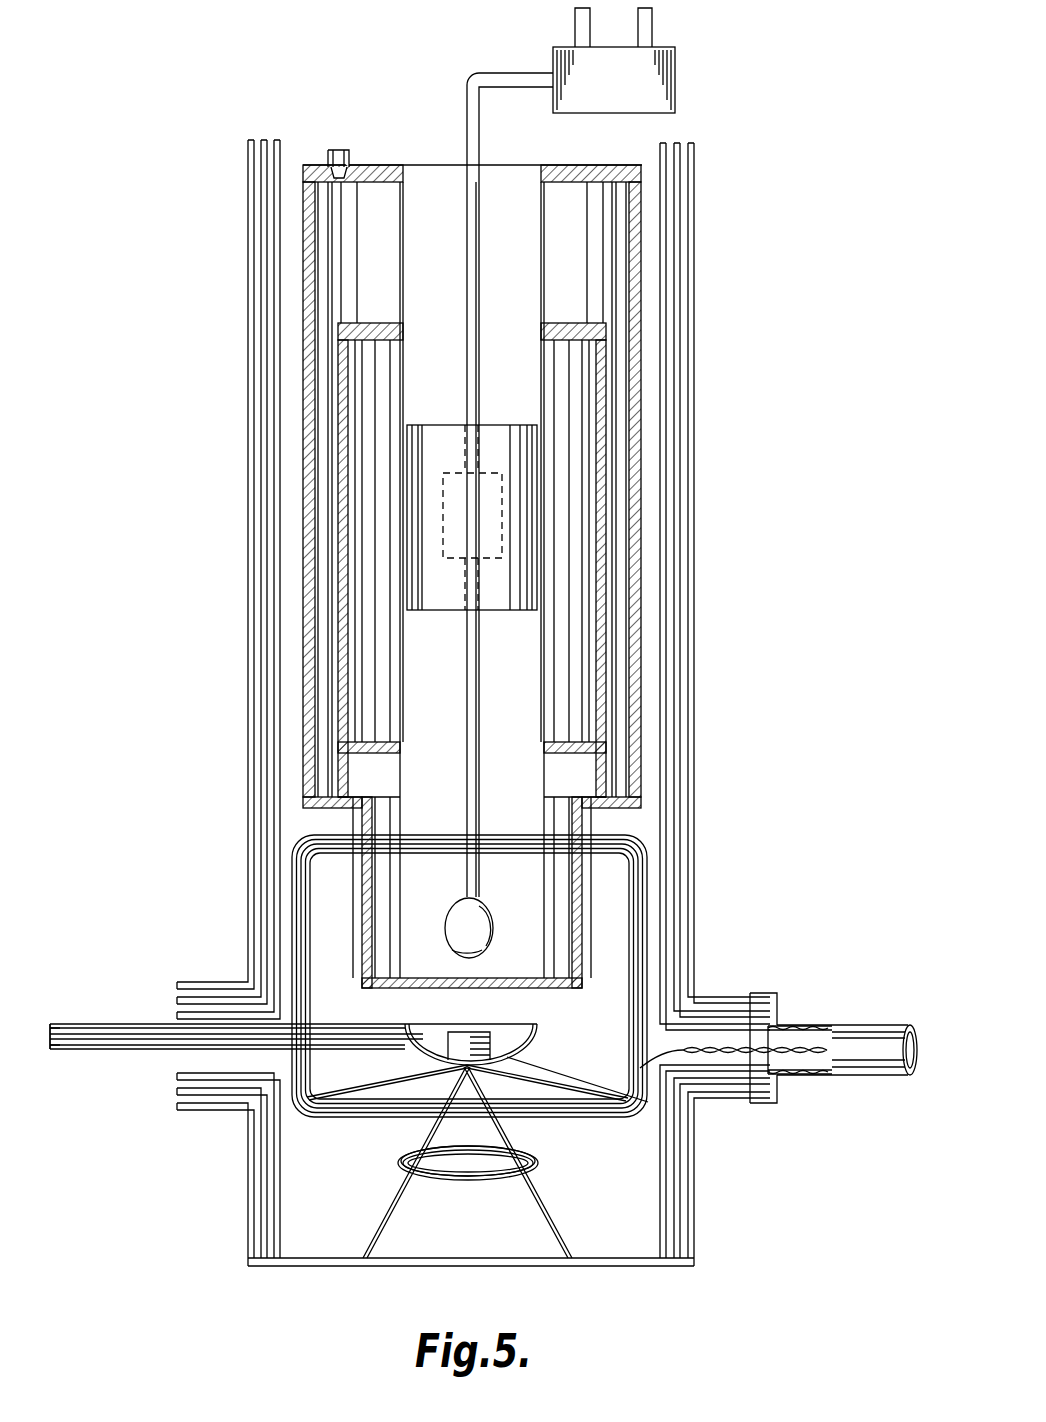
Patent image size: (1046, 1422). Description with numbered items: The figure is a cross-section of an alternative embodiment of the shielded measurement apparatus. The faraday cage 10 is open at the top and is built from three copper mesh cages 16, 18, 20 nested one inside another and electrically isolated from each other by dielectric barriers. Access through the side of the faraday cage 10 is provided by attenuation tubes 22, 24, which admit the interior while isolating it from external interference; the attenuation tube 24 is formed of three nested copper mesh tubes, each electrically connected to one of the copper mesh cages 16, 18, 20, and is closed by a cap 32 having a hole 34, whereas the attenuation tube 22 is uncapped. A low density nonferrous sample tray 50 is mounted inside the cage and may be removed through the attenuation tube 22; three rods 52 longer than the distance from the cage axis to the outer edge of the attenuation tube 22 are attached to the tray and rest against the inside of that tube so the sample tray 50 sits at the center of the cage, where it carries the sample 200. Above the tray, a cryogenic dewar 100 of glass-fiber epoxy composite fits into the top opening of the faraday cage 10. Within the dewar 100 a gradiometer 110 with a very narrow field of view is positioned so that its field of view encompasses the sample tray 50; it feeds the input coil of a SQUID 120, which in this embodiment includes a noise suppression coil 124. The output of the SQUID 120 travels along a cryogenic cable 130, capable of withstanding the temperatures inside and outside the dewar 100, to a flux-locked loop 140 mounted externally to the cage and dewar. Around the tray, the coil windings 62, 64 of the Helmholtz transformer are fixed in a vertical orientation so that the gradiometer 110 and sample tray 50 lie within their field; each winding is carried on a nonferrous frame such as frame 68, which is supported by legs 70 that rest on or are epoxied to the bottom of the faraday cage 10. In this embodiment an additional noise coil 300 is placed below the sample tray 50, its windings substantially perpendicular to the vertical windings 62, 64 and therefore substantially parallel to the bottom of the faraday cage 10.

The faraday cage 10 is at (486, 674).
The copper mesh cage 16 is at (695, 143).
The copper mesh cage 18 is at (681, 143).
The copper mesh cage 20 is at (667, 143).
The attenuation tube 22 is at (168, 1059).
The attenuation tube 24 is at (784, 1081).
The cap 32 is at (778, 1010).
The hole 34 is at (766, 1056).
The sample tray 50 is at (625, 1112).
The rods 52 is at (103, 1049).
The coil winding 62 is at (340, 1093).
The coil winding 64 is at (340, 1093).
The frame 68 is at (380, 1095).
The legs 70 is at (388, 1221).
The cryogenic dewar 100 is at (374, 161).
The gradiometer 110 is at (493, 925).
The SQUID 120 is at (538, 457).
The noise suppression coil 124 is at (503, 540).
The cryogenic cable 130 is at (466, 146).
The flux-locked loop 140 is at (676, 70).
The sample 200 is at (493, 1050).
The noise coil 300 is at (531, 1179).